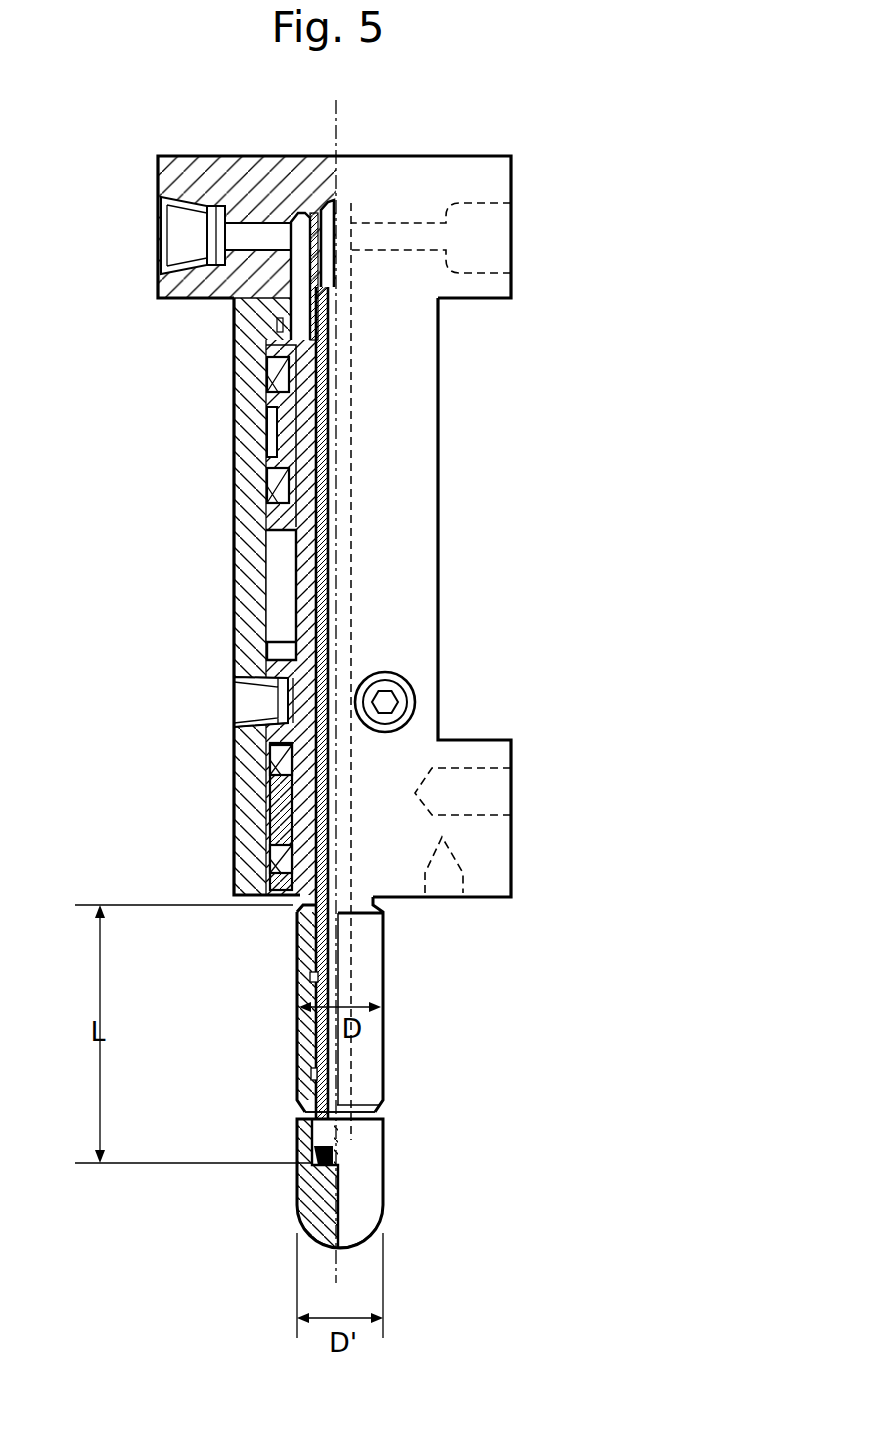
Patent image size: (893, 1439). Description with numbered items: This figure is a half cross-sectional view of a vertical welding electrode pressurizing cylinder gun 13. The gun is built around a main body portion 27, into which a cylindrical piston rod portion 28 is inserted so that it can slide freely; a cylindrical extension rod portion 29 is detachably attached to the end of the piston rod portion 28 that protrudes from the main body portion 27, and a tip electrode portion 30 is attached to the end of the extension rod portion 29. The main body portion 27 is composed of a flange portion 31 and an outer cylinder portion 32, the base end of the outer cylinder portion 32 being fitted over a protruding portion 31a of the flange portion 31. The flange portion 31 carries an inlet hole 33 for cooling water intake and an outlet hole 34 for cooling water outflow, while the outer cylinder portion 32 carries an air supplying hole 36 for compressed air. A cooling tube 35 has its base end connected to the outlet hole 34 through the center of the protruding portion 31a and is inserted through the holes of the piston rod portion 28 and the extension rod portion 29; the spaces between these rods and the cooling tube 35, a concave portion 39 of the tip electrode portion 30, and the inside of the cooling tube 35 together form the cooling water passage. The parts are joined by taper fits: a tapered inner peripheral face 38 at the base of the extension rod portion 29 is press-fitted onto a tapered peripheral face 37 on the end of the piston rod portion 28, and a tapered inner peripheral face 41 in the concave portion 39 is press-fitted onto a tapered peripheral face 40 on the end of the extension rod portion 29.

The vertical welding electrode pressurizing cylinder gun 13 is at (510, 470).
The main body portion 27 is at (82, 330).
The piston rod portion 28 is at (288, 603).
The extension rod portion 29 is at (290, 1022).
The tip electrode portion 30 is at (290, 1189).
The flange portion 31 is at (190, 303).
The protruding portion 31a is at (232, 353).
The outer cylinder portion 32 is at (228, 446).
The inlet hole 33 is at (178, 231).
The outlet hole 34 is at (483, 247).
The cooling tube 35 is at (314, 1074).
The air supplying hole 36 is at (250, 702).
The tapered peripheral face 37 is at (300, 923).
The tapered inner peripheral face 38 is at (332, 940).
The concave portion 39 is at (300, 1232).
The tapered peripheral face 40 is at (300, 1122).
The tapered inner peripheral face 41 is at (340, 1138).